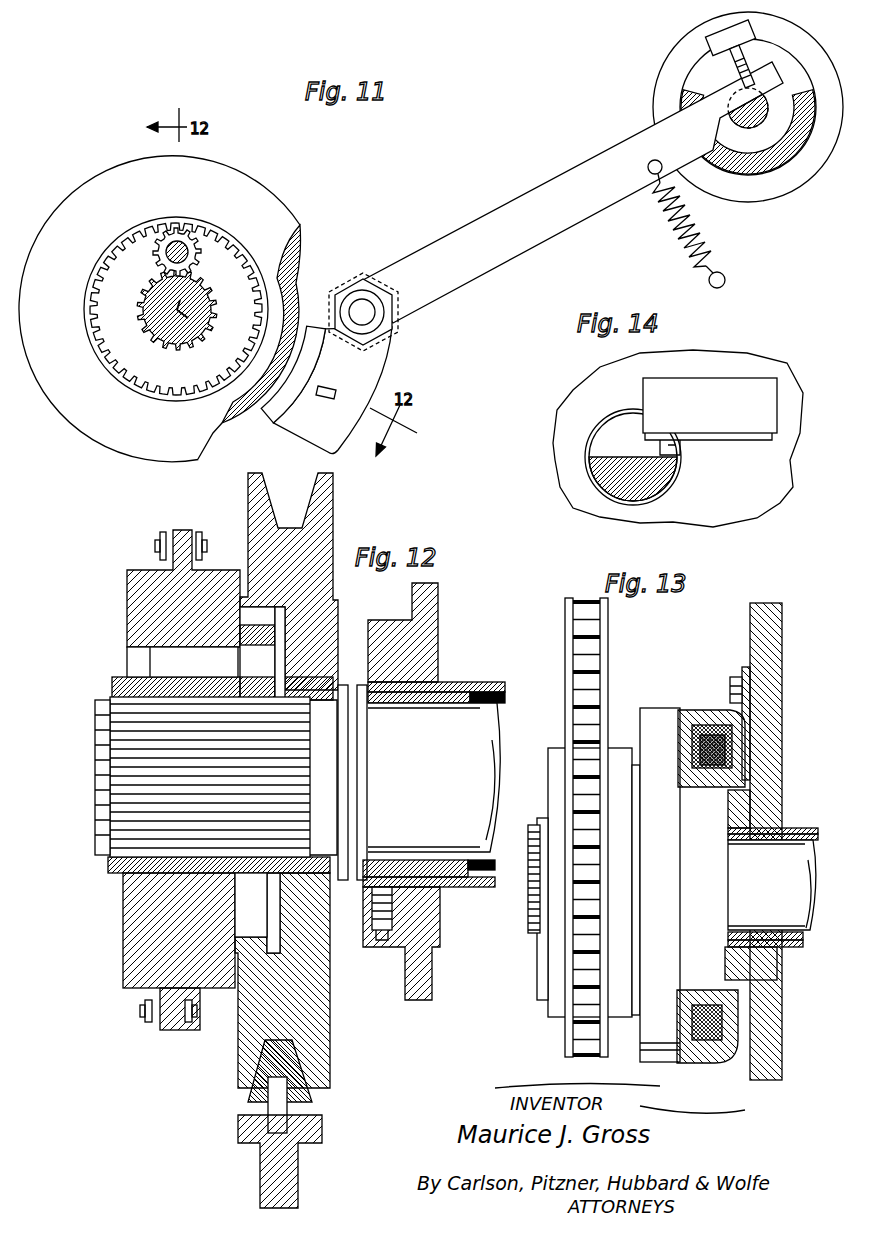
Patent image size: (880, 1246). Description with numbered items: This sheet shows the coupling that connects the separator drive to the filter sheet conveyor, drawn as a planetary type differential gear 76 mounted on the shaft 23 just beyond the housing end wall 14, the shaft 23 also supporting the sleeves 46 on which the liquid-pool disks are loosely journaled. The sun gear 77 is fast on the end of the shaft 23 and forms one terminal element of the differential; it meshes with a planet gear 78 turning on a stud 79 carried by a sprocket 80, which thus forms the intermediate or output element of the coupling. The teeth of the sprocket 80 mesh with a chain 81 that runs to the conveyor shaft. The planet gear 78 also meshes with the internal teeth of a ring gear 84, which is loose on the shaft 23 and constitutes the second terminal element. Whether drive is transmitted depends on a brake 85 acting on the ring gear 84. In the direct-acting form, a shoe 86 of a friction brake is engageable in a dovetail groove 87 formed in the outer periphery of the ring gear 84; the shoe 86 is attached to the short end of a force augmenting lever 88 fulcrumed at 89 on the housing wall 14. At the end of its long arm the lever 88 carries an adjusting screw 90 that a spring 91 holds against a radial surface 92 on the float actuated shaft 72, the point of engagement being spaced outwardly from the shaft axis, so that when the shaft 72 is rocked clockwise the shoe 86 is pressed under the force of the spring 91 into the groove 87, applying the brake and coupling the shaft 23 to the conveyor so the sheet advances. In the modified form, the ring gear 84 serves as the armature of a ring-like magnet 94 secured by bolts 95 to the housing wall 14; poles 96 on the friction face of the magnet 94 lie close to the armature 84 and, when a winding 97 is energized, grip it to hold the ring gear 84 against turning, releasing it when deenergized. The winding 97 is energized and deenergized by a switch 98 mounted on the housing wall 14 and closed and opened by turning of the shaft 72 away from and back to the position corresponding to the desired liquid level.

In FIG. 14, the housing end wall 14 is at (781, 484).
In FIG. 12, the housing end wall 14 is at (402, 993).
In FIG. 13, the housing end wall 14 is at (768, 742).
In FIG. 11, the shaft 23 is at (205, 327).
In FIG. 12, the shaft 23 is at (496, 726).
In FIG. 13, the shaft 23 is at (815, 940).
In FIG. 12, the sleeves 46 is at (483, 683).
In FIG. 13, the sleeves 46 is at (802, 830).
In FIG. 11, the shaft 72 is at (754, 122).
In FIG. 14, the shaft 72 is at (612, 490).
In FIG. 11, the planetary type differential gear 76 is at (238, 235).
In FIG. 11, the sun gear 77 is at (190, 341).
In FIG. 12, the sun gear 77 is at (112, 777).
In FIG. 11, the planet gear 78 is at (196, 259).
In FIG. 12, the planet gear 78 is at (262, 639).
In FIG. 11, the stud 79 is at (166, 255).
In FIG. 12, the stud 79 is at (155, 661).
In FIG. 12, the sprocket 80 is at (137, 597).
In FIG. 13, the sprocket 80 is at (552, 989).
In FIG. 12, the chain 81 is at (160, 554).
In FIG. 13, the chain 81 is at (598, 656).
In FIG. 11, the ring gear 84 is at (118, 369).
In FIG. 12, the ring gear 84 is at (252, 934).
In FIG. 13, the ring gear 84 is at (652, 713).
In FIG. 11, the brake 85 is at (366, 364).
In FIG. 13, the brake 85 is at (686, 696).
In FIG. 11, the shoe 86 is at (281, 421).
In FIG. 11, the dovetail groove 87 is at (314, 262).
In FIG. 12, the dovetail groove 87 is at (314, 500).
In FIG. 11, the force augmenting lever 88 is at (454, 240).
In FIG. 11, the fulcrum 89 is at (368, 304).
In FIG. 11, the adjusting screw 90 is at (746, 56).
In FIG. 11, the spring 91 is at (703, 231).
In FIG. 11, the radial surface 92 is at (728, 118).
In FIG. 14, the radial surface 92 is at (598, 440).
In FIG. 13, the ring-like magnet 94 is at (712, 714).
In FIG. 13, the bolts 95 is at (731, 677).
In FIG. 13, the poles 96 is at (686, 718).
In FIG. 13, the winding 97 is at (708, 1012).
In FIG. 14, the switch 98 is at (758, 393).